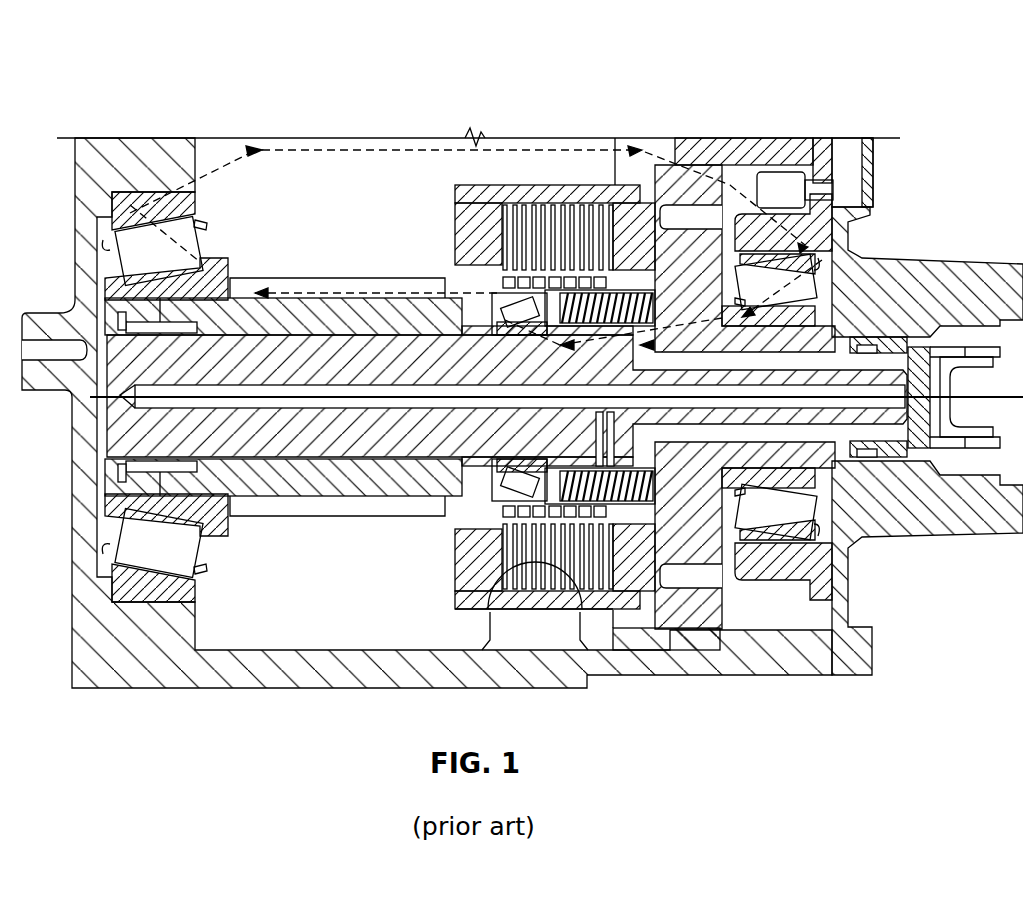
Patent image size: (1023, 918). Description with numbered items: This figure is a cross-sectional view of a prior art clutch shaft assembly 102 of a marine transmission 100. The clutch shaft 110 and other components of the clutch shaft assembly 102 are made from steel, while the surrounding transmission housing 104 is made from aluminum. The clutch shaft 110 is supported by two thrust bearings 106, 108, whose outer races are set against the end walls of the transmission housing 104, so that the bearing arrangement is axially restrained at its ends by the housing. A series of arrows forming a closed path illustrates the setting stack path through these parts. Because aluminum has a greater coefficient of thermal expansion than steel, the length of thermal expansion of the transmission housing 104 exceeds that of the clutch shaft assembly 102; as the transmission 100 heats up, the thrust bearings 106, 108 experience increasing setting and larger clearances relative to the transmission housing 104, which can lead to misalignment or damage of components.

The marine transmission 100 is at (568, 50).
The clutch shaft assembly 102 is at (497, 168).
The transmission housing 104 is at (140, 148).
The thrust bearing 106 is at (187, 198).
The thrust bearing 108 is at (760, 277).
The clutch shaft 110 is at (323, 335).